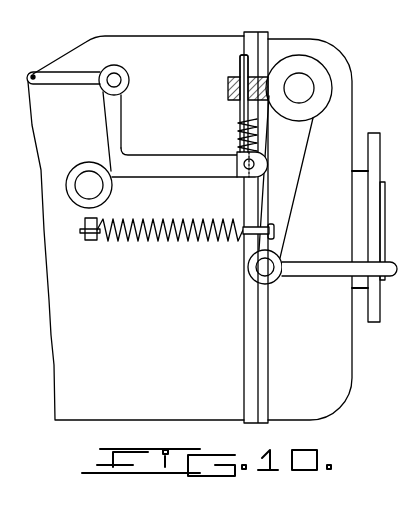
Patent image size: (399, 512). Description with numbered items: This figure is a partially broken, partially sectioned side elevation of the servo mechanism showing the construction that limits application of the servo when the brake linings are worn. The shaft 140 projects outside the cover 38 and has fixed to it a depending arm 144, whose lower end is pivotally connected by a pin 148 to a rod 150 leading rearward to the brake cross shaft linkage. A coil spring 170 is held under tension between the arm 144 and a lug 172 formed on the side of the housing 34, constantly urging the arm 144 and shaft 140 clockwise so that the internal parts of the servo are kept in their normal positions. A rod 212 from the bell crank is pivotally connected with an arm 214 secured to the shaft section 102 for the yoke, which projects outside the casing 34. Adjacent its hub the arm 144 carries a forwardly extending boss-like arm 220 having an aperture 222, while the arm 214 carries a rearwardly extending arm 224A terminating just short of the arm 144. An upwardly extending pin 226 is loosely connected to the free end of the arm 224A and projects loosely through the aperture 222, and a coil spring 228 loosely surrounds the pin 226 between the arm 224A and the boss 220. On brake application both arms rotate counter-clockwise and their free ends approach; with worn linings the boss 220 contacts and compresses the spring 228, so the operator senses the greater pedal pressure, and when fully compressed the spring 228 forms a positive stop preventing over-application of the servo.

The housing 34 is at (167, 36).
The cover 38 is at (288, 40).
The shaft 140 is at (305, 75).
The depending arm 144 is at (290, 180).
The pin 148 is at (258, 268).
The rod 150 is at (305, 277).
The rod 212 is at (60, 75).
The arm 214 is at (104, 116).
The shaft section 102 is at (85, 170).
The lever arm 224A is at (193, 157).
The aperture 222 is at (232, 95).
The pin 226 is at (240, 62).
The boss-like arm 220 is at (230, 85).
The coil spring 228 is at (238, 128).
The coil spring 170 is at (127, 238).
The lug 172 is at (85, 240).